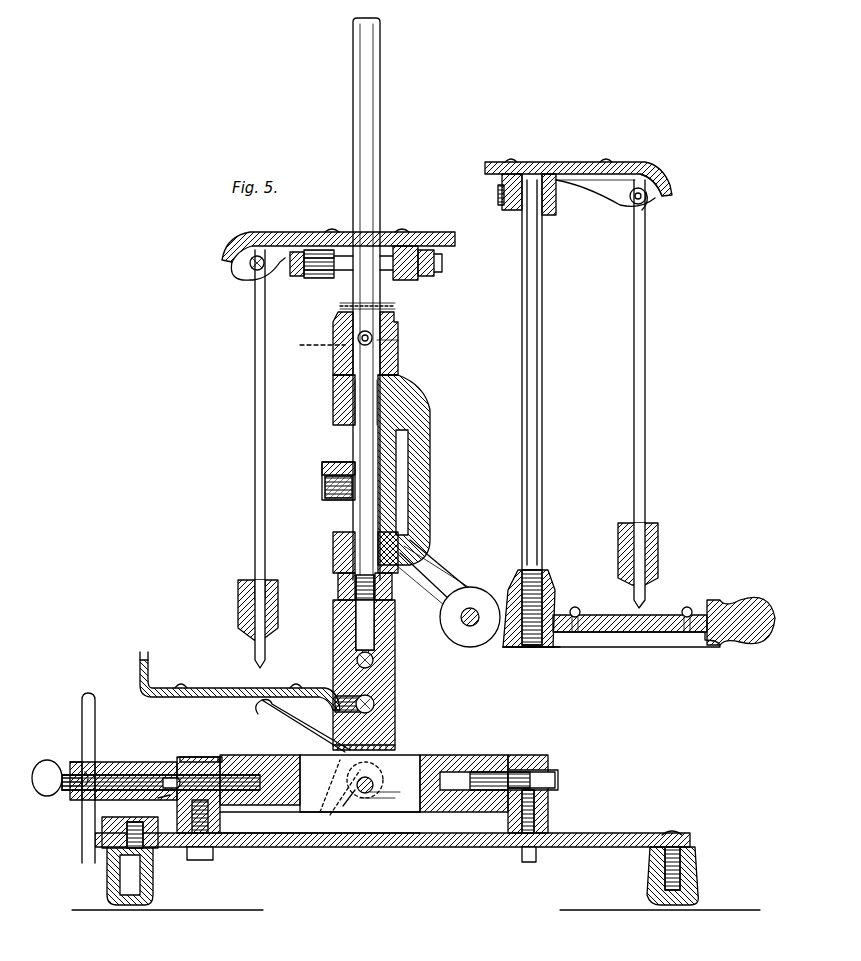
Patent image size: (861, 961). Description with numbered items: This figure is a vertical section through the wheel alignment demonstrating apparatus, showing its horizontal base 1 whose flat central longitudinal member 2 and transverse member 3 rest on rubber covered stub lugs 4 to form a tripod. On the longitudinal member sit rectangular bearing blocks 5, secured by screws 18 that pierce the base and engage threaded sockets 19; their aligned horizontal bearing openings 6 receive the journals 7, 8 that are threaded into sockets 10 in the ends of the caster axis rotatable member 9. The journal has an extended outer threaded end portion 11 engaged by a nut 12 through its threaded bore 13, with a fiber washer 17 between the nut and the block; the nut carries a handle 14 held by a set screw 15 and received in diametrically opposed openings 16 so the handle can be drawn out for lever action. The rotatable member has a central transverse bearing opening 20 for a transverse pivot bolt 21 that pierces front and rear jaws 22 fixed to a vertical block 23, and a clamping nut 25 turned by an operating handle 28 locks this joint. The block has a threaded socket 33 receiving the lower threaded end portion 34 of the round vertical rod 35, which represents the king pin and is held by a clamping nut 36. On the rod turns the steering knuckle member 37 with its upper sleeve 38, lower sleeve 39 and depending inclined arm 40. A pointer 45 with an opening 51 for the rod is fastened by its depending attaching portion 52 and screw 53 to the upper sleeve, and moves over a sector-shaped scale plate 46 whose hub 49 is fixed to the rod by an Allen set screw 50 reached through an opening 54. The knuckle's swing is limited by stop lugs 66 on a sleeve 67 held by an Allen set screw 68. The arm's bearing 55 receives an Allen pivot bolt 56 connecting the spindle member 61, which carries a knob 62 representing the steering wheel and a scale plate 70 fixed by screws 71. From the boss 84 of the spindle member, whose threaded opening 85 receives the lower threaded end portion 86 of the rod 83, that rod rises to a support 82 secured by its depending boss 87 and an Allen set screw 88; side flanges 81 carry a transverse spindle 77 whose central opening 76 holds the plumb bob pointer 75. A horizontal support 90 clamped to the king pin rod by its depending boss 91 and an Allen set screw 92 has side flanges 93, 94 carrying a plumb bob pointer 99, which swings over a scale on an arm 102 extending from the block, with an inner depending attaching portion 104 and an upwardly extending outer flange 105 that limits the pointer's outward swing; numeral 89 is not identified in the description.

The horizontal base 1 is at (620, 822).
The central longitudinal member 2 is at (447, 848).
The transverse member 3 is at (102, 828).
The rubber covered stub lugs 4 is at (125, 905).
The rectangular bearing blocks 5 is at (190, 757).
The horizontal bearing openings 6 is at (212, 757).
The journal 7 is at (180, 757).
The journal 8 is at (556, 780).
The caster axis rotatable member 9 is at (455, 756).
The sockets 10 is at (238, 755).
The extended outer threaded end portion 11 is at (135, 775).
The nut 12 is at (108, 762).
The threaded bore 13 is at (164, 805).
The handle 14 is at (82, 855).
The set screw 15 is at (52, 795).
The diametrically opposed openings 16 is at (85, 772).
The washer 17 is at (172, 776).
The screws 18 is at (210, 858).
The threaded sockets 19 is at (548, 815).
The central transverse bearing opening 20 is at (368, 795).
The transverse pivot bolt 21 is at (358, 790).
The front and rear jaws 22 is at (395, 748).
The vertical block 23 is at (395, 660).
The clamping nut 25 is at (385, 775).
The operating handle 28 is at (272, 714).
The threaded socket 33 is at (390, 618).
The lower threaded end portion 34 is at (333, 624).
The round vertical rod 35 is at (381, 44).
The clamping nut 36 is at (338, 590).
The steering knuckle member 37 is at (430, 408).
The upper sleeve 38 is at (333, 403).
The lower sleeve 39 is at (333, 538).
The depending downwardly and outwardly inclined arm 40 is at (445, 555).
The pointer 45 is at (338, 318).
The sector-shaped scale plate 46 is at (400, 326).
The hub 49 is at (335, 350).
The Allen set screw 50 is at (398, 350).
The opening 51 is at (382, 302).
The depending attaching portion 52 is at (335, 372).
The screw 53 is at (398, 378).
The opening 54 is at (314, 347).
The bearing 55 is at (465, 647).
The Allen pivot bolt 56 is at (478, 630).
The spindle member 61 is at (668, 647).
The knob 62 is at (752, 612).
The stop lugs 66 is at (322, 461).
The sleeve 67 is at (333, 460).
The Allen set screw 68 is at (325, 486).
The scale plate 70 is at (658, 615).
The screws 71 is at (590, 609).
The plumb bob pointer 75 is at (645, 433).
The central opening 76 is at (650, 196).
The transverse spindle 77 is at (650, 208).
The side flanges 81 is at (620, 205).
The support 82 is at (642, 165).
The rod 83 is at (542, 505).
The boss 84 is at (553, 600).
The threaded opening 85 is at (510, 648).
The lower threaded end portion 86 is at (535, 648).
The depending boss 87 is at (555, 214).
The Allen set screw 88 is at (500, 200).
The bracket 89 is at (560, 162).
The horizontal support 90 is at (295, 233).
The depending boss 91 is at (322, 280).
The Allen set screw 92 is at (405, 280).
The side flange 93 is at (238, 274).
The side flange 94 is at (303, 280).
The plumb bob pointer 99 is at (254, 505).
The arm 102 is at (178, 700).
The inner depending attaching portion 104 is at (338, 714).
The upwardly extending outer flange 105 is at (152, 643).